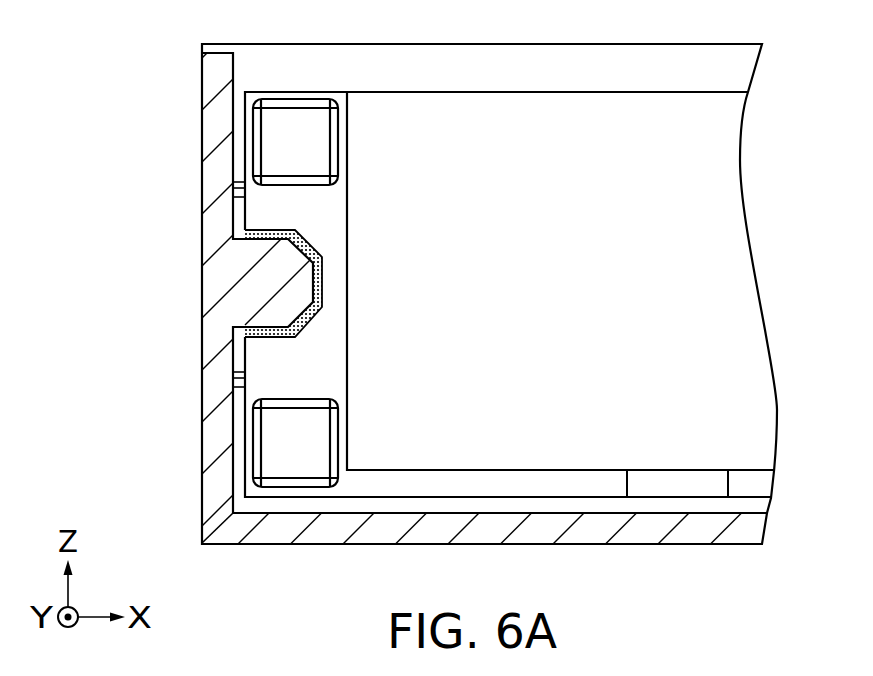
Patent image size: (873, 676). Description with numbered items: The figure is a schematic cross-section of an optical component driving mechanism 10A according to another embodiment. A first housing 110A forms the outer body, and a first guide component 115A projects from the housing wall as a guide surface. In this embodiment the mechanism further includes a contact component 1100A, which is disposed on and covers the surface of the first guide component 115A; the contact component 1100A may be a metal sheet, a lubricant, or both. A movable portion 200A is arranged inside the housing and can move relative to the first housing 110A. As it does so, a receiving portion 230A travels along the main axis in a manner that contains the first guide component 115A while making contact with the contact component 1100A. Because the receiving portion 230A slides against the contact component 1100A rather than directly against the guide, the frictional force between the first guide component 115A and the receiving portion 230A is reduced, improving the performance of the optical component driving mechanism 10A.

The optical component driving mechanism 10A is at (110, 47).
The first housing 110A is at (690, 543).
The first guide component 115A is at (268, 282).
The contact component 1100A is at (263, 237).
The movable portion 200A is at (345, 500).
The receiving portion 230A is at (308, 241).